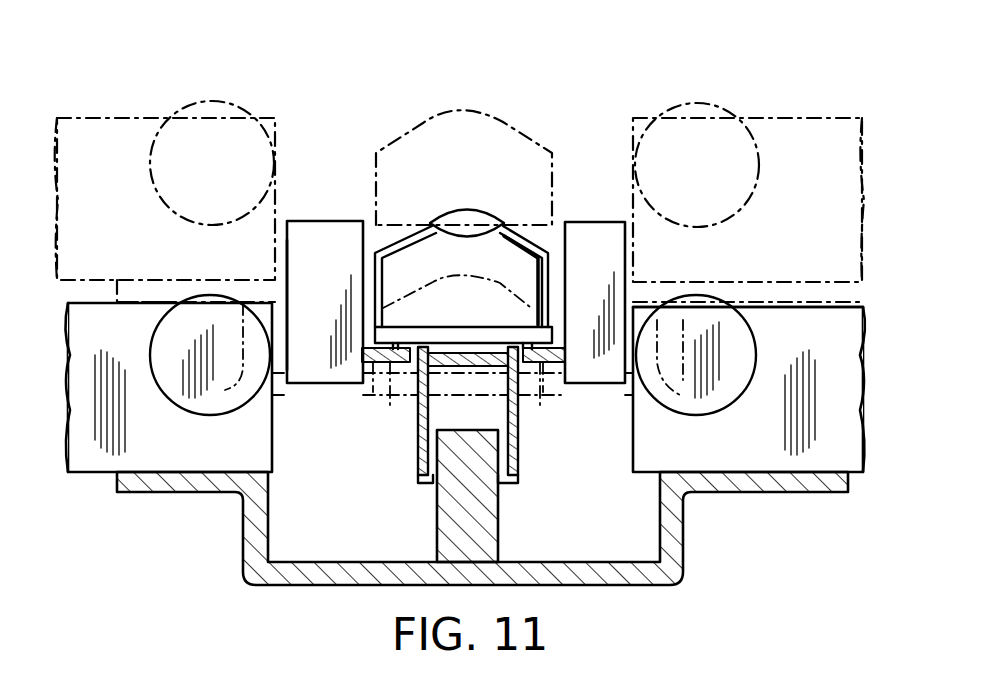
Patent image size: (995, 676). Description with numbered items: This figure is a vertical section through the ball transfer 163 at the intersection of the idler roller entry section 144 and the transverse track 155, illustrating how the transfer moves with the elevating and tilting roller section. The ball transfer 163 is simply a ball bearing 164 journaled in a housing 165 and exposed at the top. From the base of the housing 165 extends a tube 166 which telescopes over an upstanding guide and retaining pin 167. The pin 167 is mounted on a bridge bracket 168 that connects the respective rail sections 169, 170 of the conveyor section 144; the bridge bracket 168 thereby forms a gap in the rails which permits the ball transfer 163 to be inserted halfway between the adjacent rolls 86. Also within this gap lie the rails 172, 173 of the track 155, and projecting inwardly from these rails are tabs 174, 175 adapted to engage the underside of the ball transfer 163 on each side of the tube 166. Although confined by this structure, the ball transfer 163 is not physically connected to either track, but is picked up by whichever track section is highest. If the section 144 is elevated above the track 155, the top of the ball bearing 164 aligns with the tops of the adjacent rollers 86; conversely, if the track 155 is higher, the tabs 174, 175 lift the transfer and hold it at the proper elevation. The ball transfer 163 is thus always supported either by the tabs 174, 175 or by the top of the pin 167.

The ball transfer 163 is at (534, 117).
The track 155 is at (318, 221).
The rail 172 is at (307, 254).
The rail 173 is at (588, 232).
The housing 165 is at (406, 252).
The ball bearing 164 is at (468, 210).
The tab 174 is at (397, 367).
The tab 175 is at (532, 367).
The tube 166 is at (522, 442).
The guide and retaining pin 167 is at (500, 515).
The bridge bracket 168 is at (685, 545).
The rail section 169 is at (87, 457).
The rail section 170 is at (857, 413).
The entry section 144 is at (862, 307).
The rolls 86 is at (157, 370).